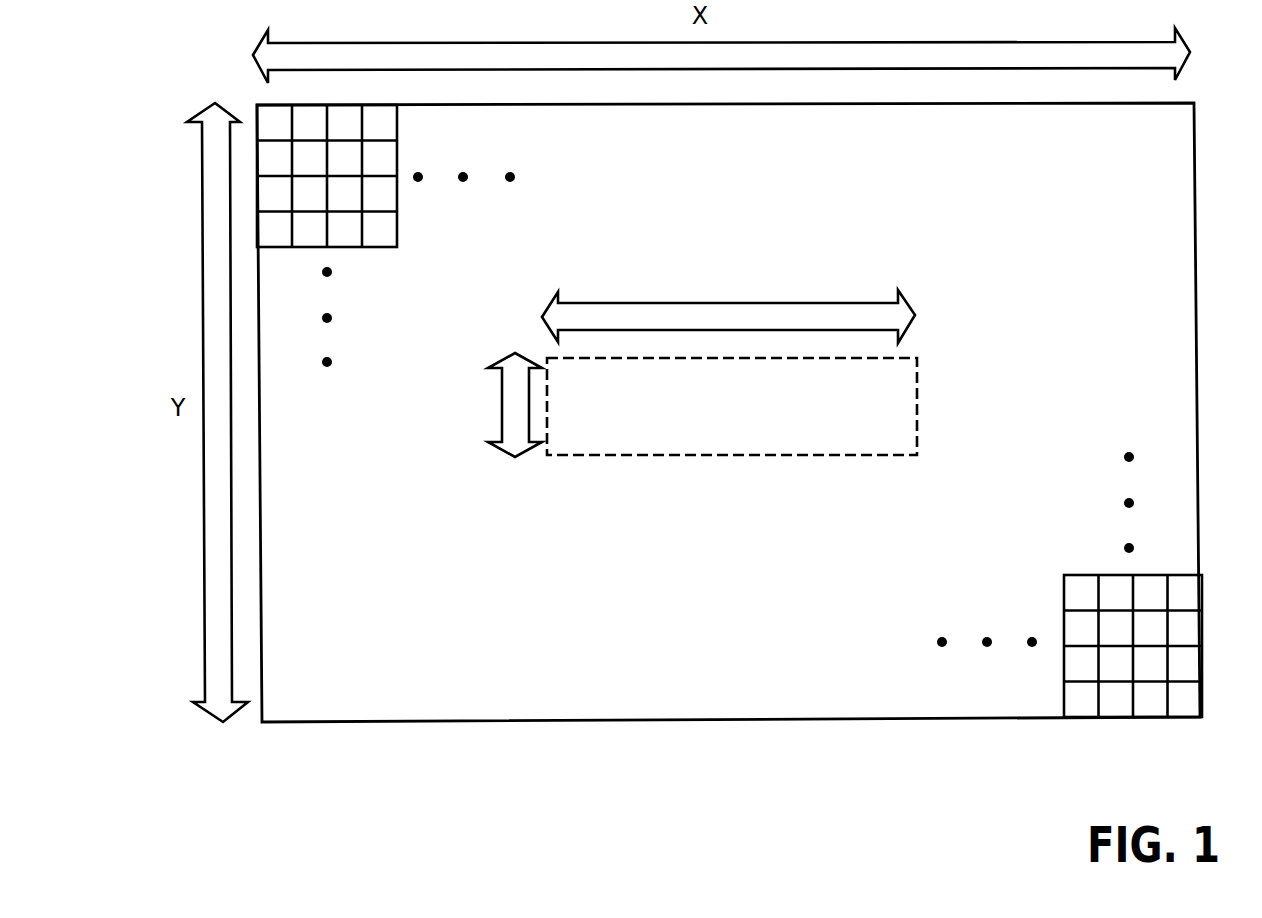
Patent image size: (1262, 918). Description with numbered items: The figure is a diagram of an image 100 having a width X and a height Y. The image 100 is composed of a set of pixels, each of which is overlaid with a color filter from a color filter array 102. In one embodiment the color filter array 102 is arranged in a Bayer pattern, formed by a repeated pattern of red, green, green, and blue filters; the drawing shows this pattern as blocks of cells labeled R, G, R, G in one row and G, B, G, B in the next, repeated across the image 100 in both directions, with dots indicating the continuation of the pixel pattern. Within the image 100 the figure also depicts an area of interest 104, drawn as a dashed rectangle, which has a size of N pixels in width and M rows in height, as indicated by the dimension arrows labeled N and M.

The image 100 is at (757, 412).
The color filter array 102 is at (355, 176).
The area of interest 104 is at (719, 359).